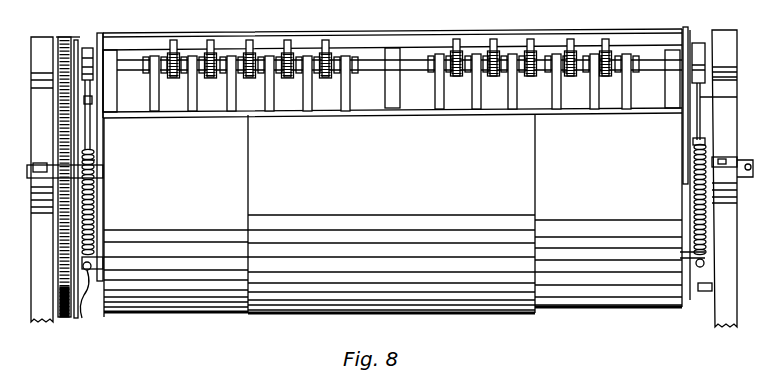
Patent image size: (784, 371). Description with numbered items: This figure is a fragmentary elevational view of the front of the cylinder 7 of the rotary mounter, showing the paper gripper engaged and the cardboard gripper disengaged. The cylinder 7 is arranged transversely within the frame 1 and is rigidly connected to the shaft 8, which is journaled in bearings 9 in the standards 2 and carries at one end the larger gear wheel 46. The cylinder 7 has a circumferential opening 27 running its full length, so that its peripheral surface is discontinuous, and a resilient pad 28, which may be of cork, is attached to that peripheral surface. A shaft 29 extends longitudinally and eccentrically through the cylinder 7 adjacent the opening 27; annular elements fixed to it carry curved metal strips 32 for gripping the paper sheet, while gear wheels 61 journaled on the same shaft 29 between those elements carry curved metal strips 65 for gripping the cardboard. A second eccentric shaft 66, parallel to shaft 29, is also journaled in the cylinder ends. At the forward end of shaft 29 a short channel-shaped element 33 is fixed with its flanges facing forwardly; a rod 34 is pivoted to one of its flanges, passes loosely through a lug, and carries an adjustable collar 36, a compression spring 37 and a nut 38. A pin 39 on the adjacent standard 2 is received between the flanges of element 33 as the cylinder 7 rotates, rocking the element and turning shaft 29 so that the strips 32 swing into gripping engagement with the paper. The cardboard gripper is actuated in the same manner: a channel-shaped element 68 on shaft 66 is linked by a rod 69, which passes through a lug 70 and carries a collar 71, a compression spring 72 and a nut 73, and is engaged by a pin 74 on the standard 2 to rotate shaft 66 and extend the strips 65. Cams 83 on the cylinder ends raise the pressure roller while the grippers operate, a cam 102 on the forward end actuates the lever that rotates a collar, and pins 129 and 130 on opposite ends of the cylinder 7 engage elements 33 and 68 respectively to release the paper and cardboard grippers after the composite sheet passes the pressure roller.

The frame 1 is at (751, 38).
The standards 2 is at (32, 303).
The cylinder 7 is at (153, 317).
The shaft 8 is at (748, 175).
The bearings 9 is at (728, 153).
The circumferential opening 27 is at (143, 115).
The resilient pad 28 is at (500, 313).
The shaft 29 is at (363, 75).
The metal strips 32 is at (320, 100).
The channel-shaped element 33 is at (697, 43).
The rod 34 is at (705, 118).
The collar 36 is at (698, 140).
The compression spring 37 is at (690, 250).
The nut 38 is at (705, 267).
The pin 39 is at (708, 292).
The gear wheel 46 is at (63, 317).
The gear wheels 61 is at (213, 78).
The metal strips 65 is at (456, 39).
The shaft 66 is at (98, 80).
The channel-shaped element 68 is at (88, 48).
The rod 69 is at (97, 143).
The lug 70 is at (100, 257).
The collar 71 is at (97, 160).
The compression spring 72 is at (95, 207).
The nut 73 is at (82, 318).
The pin 74 is at (77, 33).
The cams 83 is at (100, 33).
The cam 102 is at (690, 37).
The pin 129 is at (725, 72).
The pin 130 is at (92, 104).